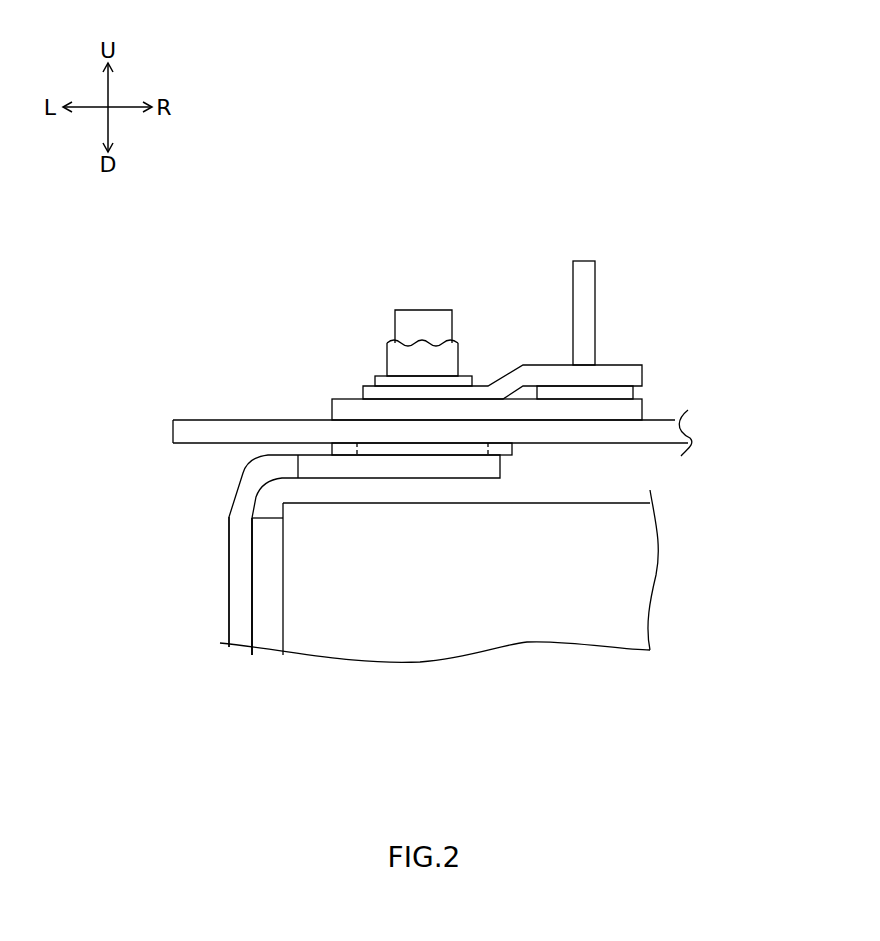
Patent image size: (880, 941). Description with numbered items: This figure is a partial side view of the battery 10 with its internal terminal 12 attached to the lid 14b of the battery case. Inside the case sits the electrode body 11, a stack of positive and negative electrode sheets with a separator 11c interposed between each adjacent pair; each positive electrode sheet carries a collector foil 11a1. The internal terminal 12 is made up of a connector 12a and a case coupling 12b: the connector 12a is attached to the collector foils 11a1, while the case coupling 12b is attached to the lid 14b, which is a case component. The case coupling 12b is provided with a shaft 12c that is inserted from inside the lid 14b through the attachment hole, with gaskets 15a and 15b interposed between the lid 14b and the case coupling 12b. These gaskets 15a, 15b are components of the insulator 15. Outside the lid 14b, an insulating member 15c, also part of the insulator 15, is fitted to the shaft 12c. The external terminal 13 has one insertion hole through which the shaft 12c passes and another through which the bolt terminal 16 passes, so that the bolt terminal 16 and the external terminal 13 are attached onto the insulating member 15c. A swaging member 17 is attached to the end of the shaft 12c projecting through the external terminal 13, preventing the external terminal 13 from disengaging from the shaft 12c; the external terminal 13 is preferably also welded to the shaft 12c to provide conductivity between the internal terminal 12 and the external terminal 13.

The battery 10 is at (228, 283).
The electrode body 11 is at (340, 652).
The collector foil 11a1 is at (263, 625).
The separator 11c is at (283, 633).
The internal terminal 12 is at (208, 501).
The connector 12a is at (228, 578).
The case coupling 12b is at (500, 470).
The shaft 12c is at (452, 316).
The external terminal 13 is at (610, 365).
The lid 14b is at (673, 420).
The insulator 15 is at (323, 399).
The gasket 15a is at (332, 448).
The gasket 15b is at (467, 452).
The insulating member 15c is at (643, 412).
The bolt terminal 16 is at (587, 261).
The swaging member 17 is at (387, 358).